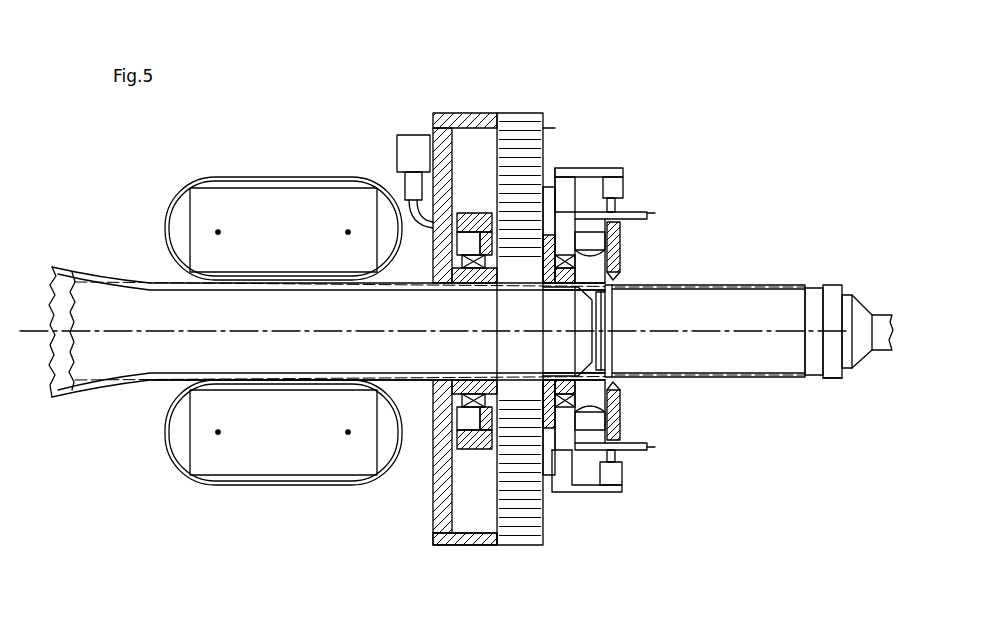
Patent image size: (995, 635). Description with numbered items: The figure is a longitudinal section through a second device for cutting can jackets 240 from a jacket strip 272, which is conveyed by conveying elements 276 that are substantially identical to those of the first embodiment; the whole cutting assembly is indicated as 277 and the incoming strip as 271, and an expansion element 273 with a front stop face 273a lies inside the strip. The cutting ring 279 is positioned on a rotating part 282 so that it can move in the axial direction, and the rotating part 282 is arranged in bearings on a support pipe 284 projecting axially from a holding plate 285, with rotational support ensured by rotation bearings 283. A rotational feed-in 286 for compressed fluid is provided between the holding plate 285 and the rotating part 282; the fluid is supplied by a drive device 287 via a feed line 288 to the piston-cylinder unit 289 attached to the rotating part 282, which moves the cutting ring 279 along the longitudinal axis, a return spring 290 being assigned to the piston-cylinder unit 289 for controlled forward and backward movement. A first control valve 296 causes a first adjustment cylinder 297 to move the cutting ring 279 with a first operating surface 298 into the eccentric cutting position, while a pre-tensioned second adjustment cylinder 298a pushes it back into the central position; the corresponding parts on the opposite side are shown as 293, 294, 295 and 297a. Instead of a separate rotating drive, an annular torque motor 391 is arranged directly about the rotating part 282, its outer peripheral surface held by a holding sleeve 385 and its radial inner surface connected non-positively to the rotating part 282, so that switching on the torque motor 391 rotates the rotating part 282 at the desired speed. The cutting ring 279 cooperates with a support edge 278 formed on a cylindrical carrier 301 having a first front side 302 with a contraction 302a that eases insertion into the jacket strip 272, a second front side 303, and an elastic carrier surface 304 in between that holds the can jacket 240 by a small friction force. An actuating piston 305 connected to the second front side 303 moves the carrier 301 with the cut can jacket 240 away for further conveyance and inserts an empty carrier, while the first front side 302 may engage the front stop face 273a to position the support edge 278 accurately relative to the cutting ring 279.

The can jacket 240 is at (760, 279).
The tube 271 is at (73, 267).
The jacket strip 272 is at (408, 384).
The expansion element 273 is at (66, 302).
The front stop face 273a is at (601, 322).
The conveying elements 276 is at (164, 416).
The rotary coupling 277 is at (586, 90).
The support edge 278 is at (613, 292).
The cutting ring 279 is at (620, 277).
The rotating part 282 is at (549, 186).
The rotation bearings 283 is at (555, 385).
The support pipe 284 is at (455, 278).
The holding plate 285 is at (430, 516).
The rotational feed-in 286 is at (447, 238).
The drive device 287 is at (395, 148).
The feed line 288 is at (405, 202).
The piston-cylinder unit 289 is at (616, 268).
The return spring 290 is at (649, 216).
The upper bracket 293 is at (642, 160).
The lower bracket 294 is at (652, 500).
The spring 295 is at (622, 244).
The first control valve 296 is at (557, 184).
The first adjustment cylinder 297 is at (626, 189).
The block 297a is at (626, 477).
The first operating surface 298 is at (650, 212).
The second adjustment cylinder 298a is at (650, 447).
The carrier 301 is at (813, 284).
The first front side 302 is at (590, 318).
The contraction 302a is at (604, 368).
The second front side 303 is at (846, 290).
The carrier surface 304 is at (814, 378).
The actuating piston 305 is at (868, 308).
The holding sleeve 385 is at (462, 548).
The torque motor 391 is at (546, 514).